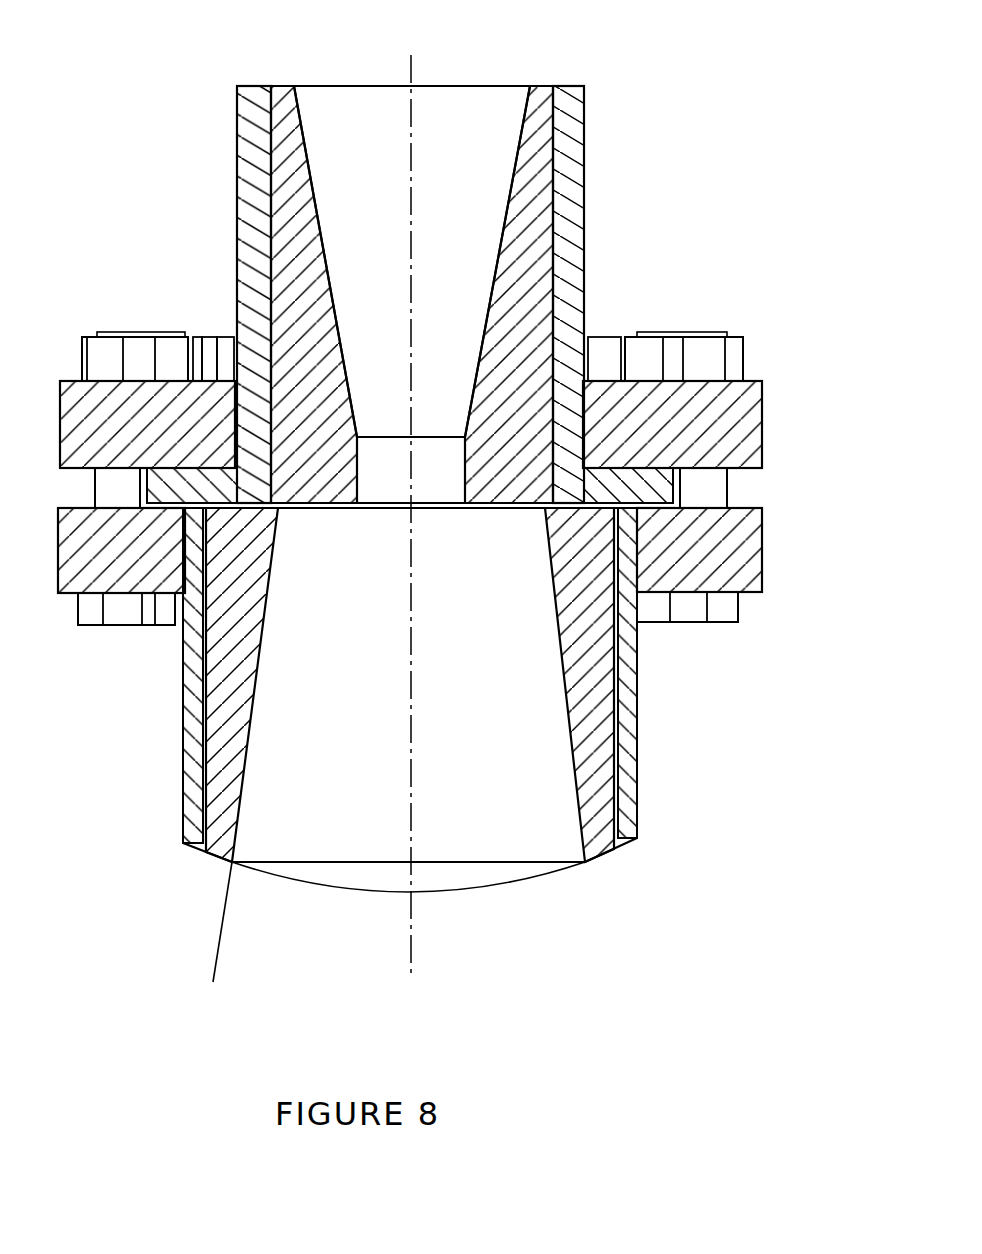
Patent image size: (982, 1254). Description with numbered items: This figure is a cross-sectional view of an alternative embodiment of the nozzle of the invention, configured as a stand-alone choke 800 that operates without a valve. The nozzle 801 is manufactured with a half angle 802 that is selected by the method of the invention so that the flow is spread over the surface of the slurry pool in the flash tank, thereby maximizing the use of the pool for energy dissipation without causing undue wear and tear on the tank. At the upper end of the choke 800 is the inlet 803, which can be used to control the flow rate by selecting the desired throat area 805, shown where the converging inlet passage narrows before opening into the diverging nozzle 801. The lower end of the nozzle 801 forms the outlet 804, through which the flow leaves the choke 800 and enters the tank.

The choke 800 is at (670, 238).
The nozzle 801 is at (567, 723).
The half angle 802 is at (397, 958).
The inlet 803 is at (455, 108).
The nozzle outlet 804 is at (468, 900).
The throat area 805 is at (382, 422).